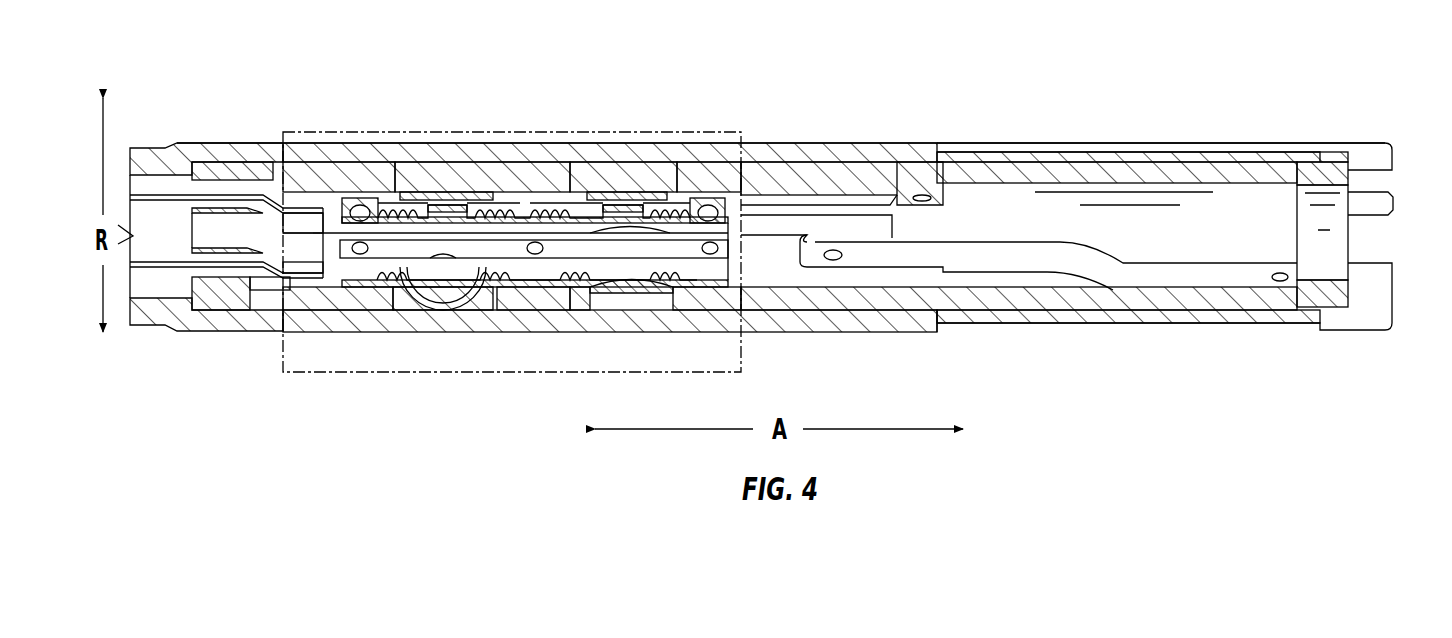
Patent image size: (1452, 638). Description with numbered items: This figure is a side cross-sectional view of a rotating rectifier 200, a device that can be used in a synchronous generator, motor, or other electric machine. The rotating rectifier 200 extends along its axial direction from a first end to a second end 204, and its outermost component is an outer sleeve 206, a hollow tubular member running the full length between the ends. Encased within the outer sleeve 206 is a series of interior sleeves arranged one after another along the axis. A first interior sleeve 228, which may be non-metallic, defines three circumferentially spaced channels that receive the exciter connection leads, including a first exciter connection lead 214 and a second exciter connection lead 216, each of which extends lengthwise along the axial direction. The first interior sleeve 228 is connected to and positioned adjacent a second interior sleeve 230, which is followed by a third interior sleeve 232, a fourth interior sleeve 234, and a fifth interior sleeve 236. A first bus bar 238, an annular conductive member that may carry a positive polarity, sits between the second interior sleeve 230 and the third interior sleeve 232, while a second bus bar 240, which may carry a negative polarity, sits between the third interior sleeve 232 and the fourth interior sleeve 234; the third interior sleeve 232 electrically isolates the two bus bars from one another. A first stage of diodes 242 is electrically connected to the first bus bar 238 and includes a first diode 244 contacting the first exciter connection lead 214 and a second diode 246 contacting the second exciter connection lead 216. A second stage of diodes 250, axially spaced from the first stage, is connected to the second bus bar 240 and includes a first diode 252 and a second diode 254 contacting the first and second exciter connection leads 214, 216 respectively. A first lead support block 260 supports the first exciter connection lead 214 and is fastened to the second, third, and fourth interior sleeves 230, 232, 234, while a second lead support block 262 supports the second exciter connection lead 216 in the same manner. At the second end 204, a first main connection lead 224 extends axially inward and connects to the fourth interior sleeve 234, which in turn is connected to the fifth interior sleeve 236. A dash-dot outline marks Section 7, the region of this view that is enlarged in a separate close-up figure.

The rotating rectifier 200 is at (240, 77).
The second end 204 is at (1378, 103).
The outer sleeve 206 is at (870, 147).
The first exciter connection lead 214 is at (272, 187).
The second exciter connection lead 216 is at (253, 268).
The first main connection lead 224 is at (1038, 258).
The first interior sleeve 228 is at (212, 166).
The second interior sleeve 230 is at (352, 180).
The third interior sleeve 232 is at (548, 177).
The fourth interior sleeve 234 is at (792, 150).
The fifth interior sleeve 236 is at (1113, 170).
The first bus bar 238 is at (440, 177).
The second bus bar 240 is at (622, 190).
The first stage of diodes 242 is at (453, 318).
The first diode 244 is at (418, 208).
The second diode 246 is at (437, 293).
The second stage of diodes 250 is at (623, 307).
The first diode 252 is at (638, 192).
The second diode 254 is at (642, 295).
The first lead support block 260 is at (577, 222).
The second lead support block 262 is at (507, 258).
The Section 7 is at (297, 373).